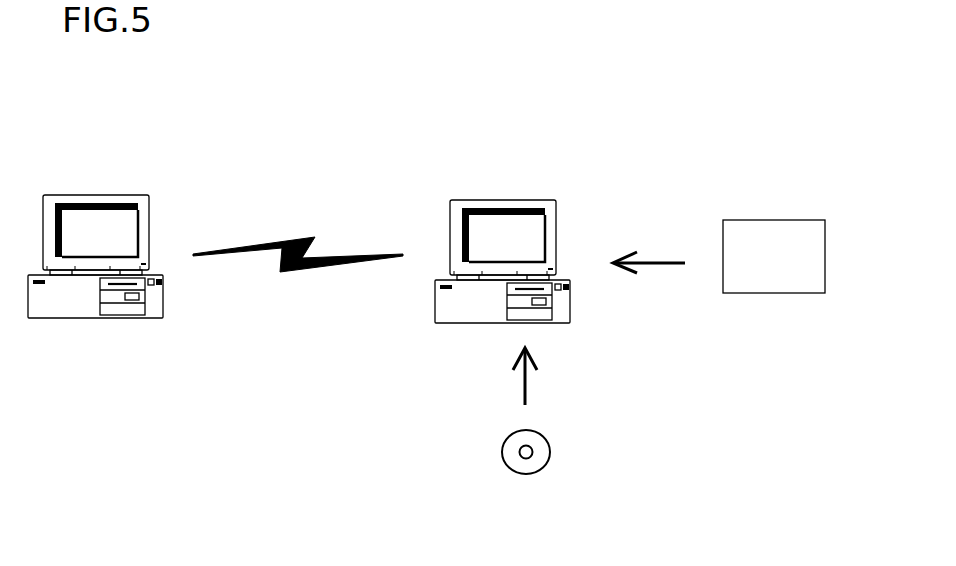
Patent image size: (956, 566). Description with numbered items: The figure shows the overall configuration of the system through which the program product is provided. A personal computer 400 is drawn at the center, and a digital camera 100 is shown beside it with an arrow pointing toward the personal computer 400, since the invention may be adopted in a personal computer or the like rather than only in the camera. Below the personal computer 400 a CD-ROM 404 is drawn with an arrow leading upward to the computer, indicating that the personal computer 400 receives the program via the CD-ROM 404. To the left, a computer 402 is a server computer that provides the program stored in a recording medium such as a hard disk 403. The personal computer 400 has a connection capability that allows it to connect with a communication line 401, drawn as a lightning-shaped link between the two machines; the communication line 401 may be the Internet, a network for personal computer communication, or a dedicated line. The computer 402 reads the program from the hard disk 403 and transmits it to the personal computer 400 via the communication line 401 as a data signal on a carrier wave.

The digital camera 100 is at (780, 220).
The personal computer 400 is at (500, 200).
The communication line 401 is at (313, 201).
The computer 402 is at (129, 216).
The hard disk 403 is at (118, 195).
The CD-ROM 404 is at (507, 472).